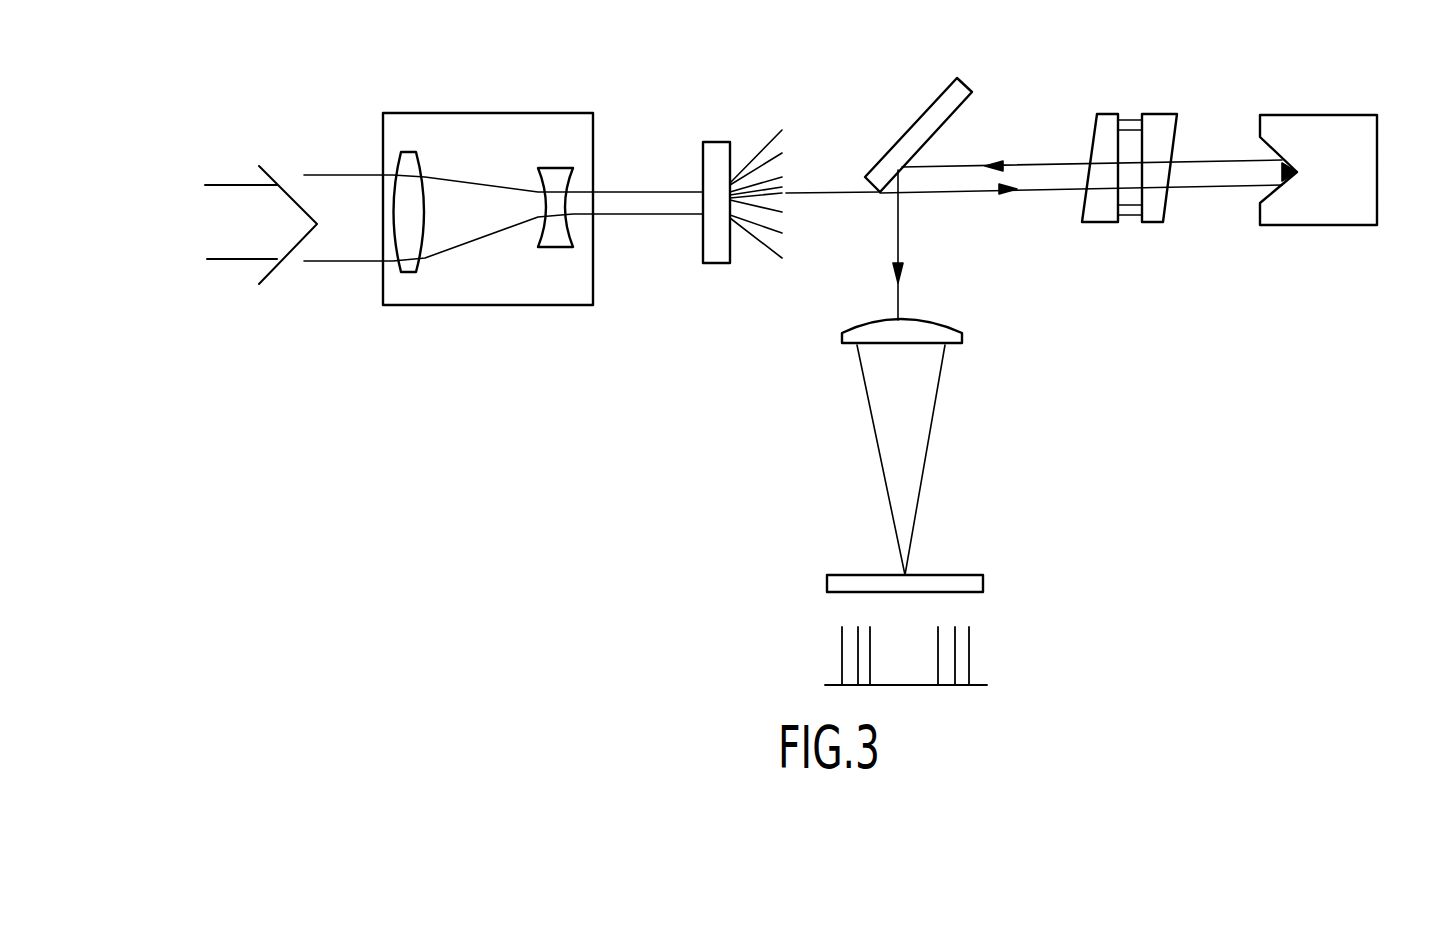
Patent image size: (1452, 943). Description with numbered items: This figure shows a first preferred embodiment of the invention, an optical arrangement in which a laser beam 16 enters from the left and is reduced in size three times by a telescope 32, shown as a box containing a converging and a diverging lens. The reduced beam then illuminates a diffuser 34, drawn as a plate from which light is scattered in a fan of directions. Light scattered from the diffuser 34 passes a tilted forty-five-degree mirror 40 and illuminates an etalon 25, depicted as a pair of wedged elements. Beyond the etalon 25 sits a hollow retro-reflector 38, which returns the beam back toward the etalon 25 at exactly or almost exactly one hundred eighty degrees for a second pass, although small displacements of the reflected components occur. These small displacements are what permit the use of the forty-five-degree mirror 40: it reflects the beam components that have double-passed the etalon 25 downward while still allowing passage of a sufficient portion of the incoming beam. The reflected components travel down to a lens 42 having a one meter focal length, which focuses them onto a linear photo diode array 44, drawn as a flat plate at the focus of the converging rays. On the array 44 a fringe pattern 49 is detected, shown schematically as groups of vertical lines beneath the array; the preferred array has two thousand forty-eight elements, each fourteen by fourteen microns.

The laser beam 16 is at (212, 170).
The telescope 32 is at (485, 112).
The diffuser 34 is at (715, 142).
The 45-degree mirror 40 is at (960, 78).
The etalon 25 is at (1127, 243).
The hollow retro-reflector 38 is at (1377, 130).
The lens 42 is at (962, 333).
The linear photo diode array 44 is at (983, 582).
The fringe pattern 49 is at (1000, 660).